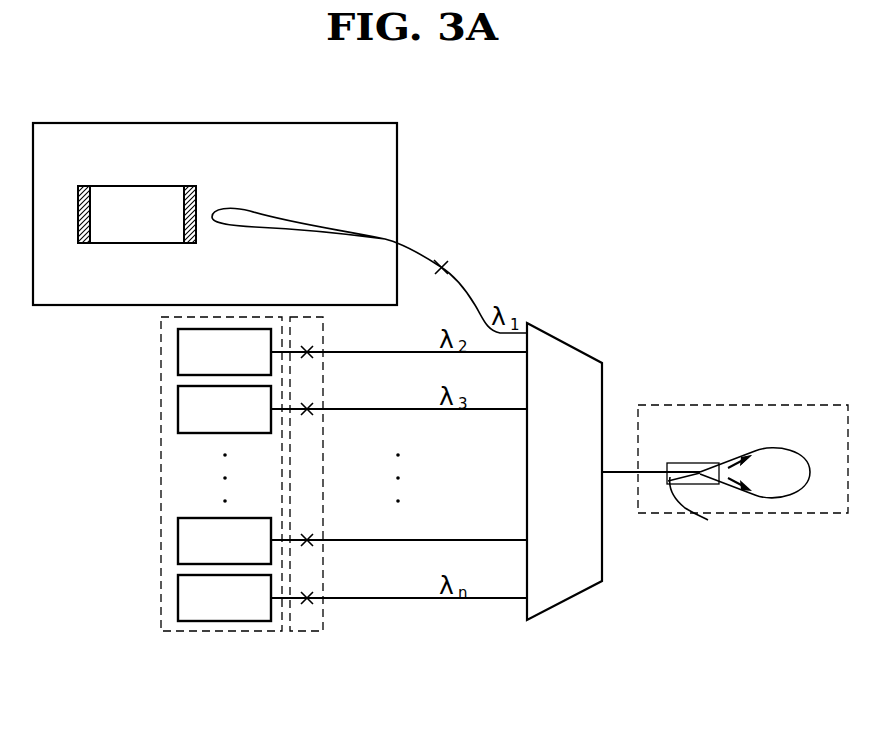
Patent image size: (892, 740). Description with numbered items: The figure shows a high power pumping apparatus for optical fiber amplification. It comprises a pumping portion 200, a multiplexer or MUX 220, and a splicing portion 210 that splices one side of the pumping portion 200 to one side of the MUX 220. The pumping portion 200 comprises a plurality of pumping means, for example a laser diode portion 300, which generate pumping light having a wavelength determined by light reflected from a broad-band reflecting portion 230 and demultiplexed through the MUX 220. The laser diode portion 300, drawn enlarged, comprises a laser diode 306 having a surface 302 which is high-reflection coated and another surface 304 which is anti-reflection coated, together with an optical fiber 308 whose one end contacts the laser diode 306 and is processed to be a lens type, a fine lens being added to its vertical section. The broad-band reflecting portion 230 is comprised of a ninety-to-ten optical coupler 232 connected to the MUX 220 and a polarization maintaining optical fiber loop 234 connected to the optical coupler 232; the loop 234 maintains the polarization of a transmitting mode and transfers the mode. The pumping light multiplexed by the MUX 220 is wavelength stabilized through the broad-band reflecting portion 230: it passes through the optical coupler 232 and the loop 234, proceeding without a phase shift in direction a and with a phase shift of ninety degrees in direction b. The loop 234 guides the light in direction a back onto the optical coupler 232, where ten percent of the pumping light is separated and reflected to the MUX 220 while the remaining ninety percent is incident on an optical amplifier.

The pumping portion 200 is at (210, 631).
The splicing portion 210 is at (312, 631).
The multiplexer 220 is at (563, 600).
The broad-band reflecting portion 230 is at (743, 491).
The optical coupler 232 is at (683, 462).
The polarization maintaining optical fiber loop 234 is at (790, 448).
The laser diode portion 300 is at (397, 180).
The high-reflection coated surface 302 is at (82, 185).
The anti-reflection coated surface 304 is at (190, 185).
The laser diode 306 is at (131, 245).
The optical fiber 308 is at (298, 210).